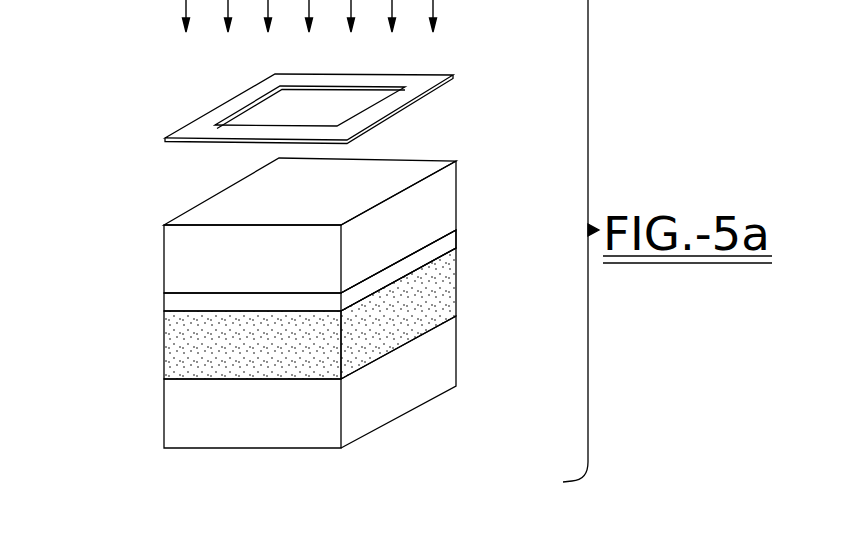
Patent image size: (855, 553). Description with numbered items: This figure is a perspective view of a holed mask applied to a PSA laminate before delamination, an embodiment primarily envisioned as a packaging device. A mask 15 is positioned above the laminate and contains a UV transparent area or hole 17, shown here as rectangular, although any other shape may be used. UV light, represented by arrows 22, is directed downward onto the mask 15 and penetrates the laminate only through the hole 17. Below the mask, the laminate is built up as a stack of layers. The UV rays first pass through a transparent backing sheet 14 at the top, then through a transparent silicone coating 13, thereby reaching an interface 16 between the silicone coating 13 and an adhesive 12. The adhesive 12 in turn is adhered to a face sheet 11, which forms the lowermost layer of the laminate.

The face sheet 11 is at (167, 413).
The adhesive 12 is at (167, 348).
The transparent silicone coating 13 is at (167, 302).
The transparent backing sheet 14 is at (167, 260).
The mask 15 is at (183, 127).
The interface 16 is at (444, 254).
The UV transparent area or hole 17 is at (252, 99).
The arrows representing UV light 22 is at (168, 20).